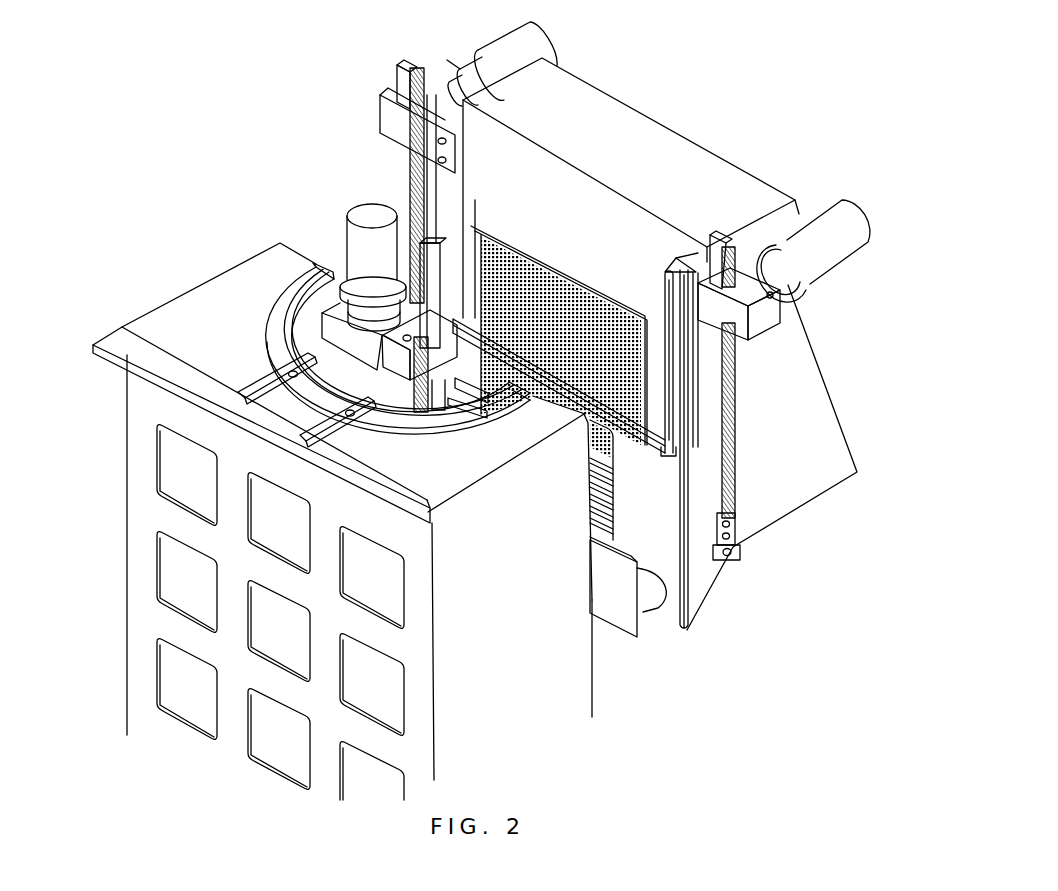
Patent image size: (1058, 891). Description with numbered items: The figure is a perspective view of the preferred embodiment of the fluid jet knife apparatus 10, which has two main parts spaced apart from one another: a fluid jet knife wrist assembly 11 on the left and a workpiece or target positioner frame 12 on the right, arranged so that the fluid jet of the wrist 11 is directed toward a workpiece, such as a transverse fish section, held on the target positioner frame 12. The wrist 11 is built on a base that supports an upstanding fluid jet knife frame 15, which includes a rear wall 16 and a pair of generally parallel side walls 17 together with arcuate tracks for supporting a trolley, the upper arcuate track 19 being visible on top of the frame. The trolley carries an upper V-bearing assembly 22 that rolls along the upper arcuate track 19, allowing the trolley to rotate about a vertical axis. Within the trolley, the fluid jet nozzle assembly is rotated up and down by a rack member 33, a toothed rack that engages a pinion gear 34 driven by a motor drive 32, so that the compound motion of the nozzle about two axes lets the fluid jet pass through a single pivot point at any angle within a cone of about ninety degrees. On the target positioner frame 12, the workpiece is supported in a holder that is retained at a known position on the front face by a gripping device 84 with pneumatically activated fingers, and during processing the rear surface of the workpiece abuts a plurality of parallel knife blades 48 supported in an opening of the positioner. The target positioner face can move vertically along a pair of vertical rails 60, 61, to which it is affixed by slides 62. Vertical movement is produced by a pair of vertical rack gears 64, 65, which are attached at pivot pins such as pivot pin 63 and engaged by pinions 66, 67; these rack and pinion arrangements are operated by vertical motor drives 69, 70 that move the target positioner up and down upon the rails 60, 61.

The fluid jet knife apparatus 10 is at (278, 160).
The fluid jet knife wrist assembly 11 is at (229, 346).
The target positioner frame 12 is at (636, 279).
The fluid jet knife frame 15 is at (524, 532).
The rear wall 16 is at (143, 525).
The side wall 17 is at (555, 695).
The upper arcuate track 19 is at (288, 288).
The upper V-bearing assembly 22 is at (290, 372).
The motor drive 32 is at (347, 240).
The rack member 33 is at (413, 203).
The pinion gear 34 is at (410, 344).
The knife blades 48 is at (612, 512).
The vertical rail 60 is at (402, 175).
The vertical rail 61 is at (665, 262).
The slide 62 is at (730, 432).
The pivot pin 63 is at (730, 557).
The vertical rack gear 64 is at (397, 63).
The vertical rack gear 65 is at (730, 250).
The pinion 66 is at (430, 73).
The pinion 67 is at (790, 305).
The vertical motor drive 69 is at (542, 36).
The vertical motor drive 70 is at (857, 220).
The gripping device 84 is at (618, 620).